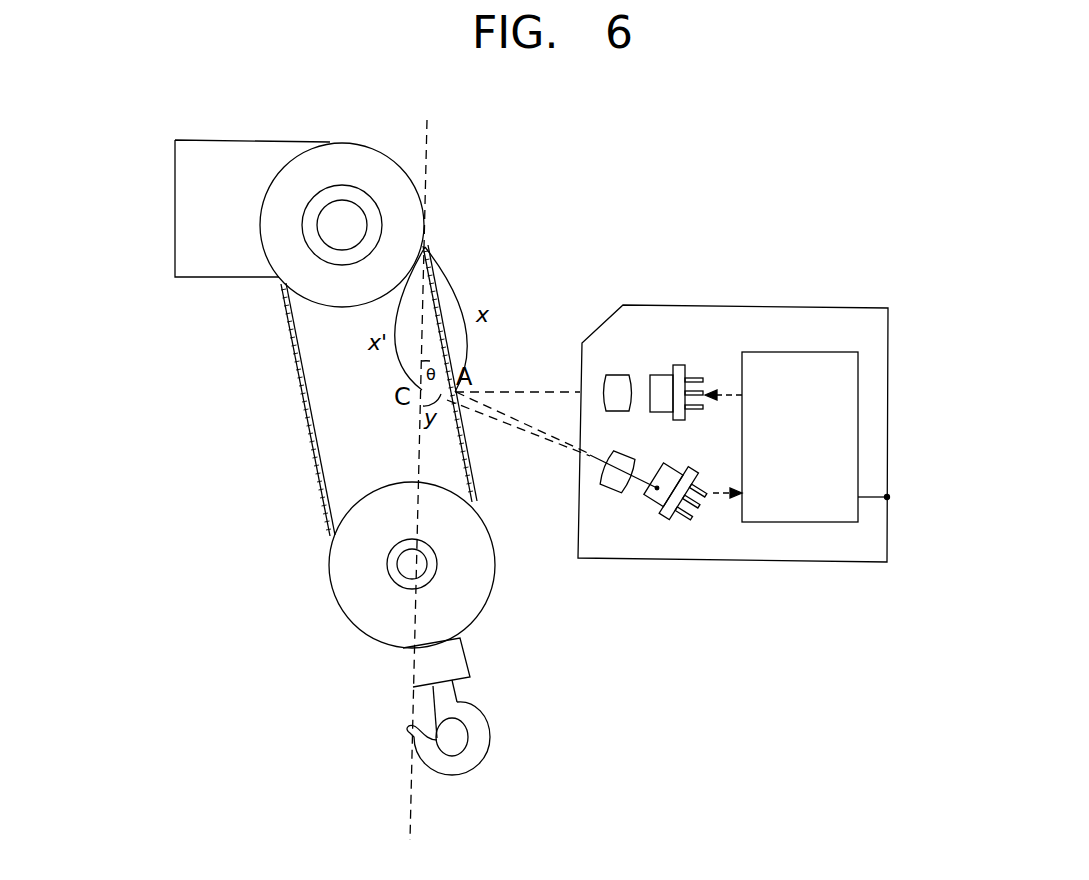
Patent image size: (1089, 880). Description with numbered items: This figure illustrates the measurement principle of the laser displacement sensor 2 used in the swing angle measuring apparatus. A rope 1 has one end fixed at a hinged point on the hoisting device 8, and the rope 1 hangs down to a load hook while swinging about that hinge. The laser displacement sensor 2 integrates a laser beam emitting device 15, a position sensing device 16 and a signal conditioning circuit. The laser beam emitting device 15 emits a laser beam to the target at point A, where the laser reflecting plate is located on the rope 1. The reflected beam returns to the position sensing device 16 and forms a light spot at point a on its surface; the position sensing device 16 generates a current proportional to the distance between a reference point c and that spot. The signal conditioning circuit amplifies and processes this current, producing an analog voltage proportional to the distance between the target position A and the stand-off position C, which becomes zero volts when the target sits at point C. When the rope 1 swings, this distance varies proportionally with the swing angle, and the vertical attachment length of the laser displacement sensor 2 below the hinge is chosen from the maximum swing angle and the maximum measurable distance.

The rope 1 is at (303, 415).
The laser displacement sensor 2 is at (805, 481).
The hoisting device 8 is at (412, 223).
The laser beam emitting device 15 is at (648, 357).
The position sensing device (PSD) 16 is at (638, 518).